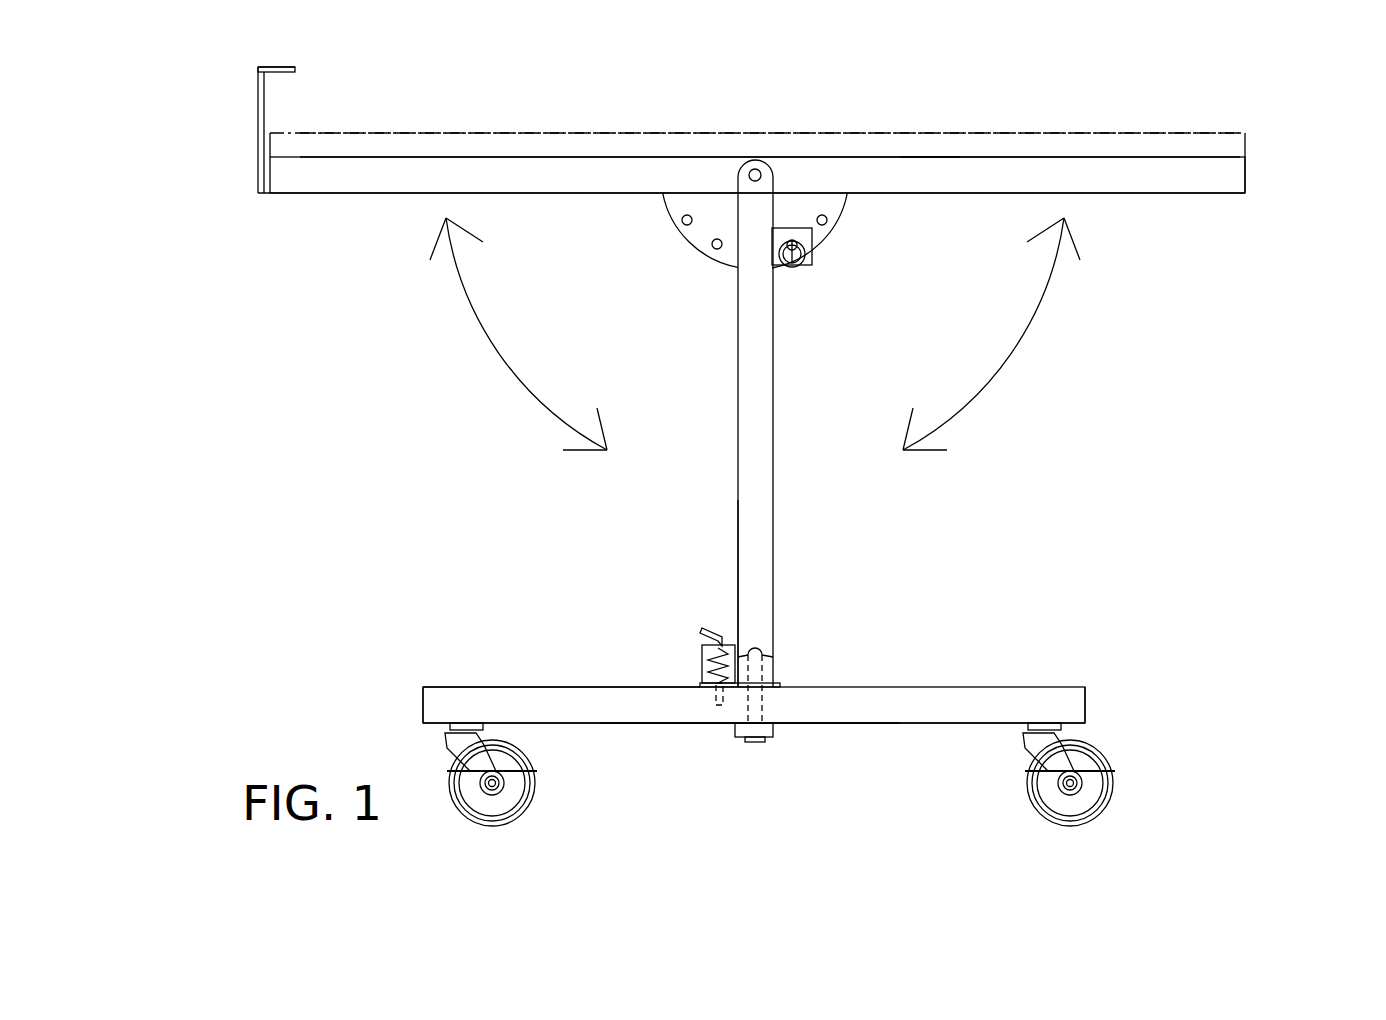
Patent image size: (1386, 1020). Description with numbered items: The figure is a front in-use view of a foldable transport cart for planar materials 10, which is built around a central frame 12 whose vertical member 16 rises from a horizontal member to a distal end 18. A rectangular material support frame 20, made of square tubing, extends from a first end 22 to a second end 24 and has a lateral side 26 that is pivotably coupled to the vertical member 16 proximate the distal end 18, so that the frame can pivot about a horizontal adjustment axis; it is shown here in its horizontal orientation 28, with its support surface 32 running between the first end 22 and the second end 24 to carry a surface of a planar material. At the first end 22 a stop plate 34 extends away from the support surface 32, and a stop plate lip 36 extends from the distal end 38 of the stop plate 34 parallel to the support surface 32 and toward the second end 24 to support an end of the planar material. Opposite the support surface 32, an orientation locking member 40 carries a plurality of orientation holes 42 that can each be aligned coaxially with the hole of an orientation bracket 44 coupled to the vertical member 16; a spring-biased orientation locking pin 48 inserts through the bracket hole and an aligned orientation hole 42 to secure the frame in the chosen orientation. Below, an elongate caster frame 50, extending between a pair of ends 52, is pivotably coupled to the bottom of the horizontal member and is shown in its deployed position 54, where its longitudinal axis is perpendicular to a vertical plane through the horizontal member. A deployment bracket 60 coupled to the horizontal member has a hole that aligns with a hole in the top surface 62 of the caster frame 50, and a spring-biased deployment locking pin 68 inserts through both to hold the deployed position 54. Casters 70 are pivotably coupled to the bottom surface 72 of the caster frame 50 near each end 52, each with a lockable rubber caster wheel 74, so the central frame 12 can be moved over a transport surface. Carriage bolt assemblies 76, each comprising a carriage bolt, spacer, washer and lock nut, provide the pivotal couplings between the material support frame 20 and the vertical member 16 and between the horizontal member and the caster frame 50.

The foldable transport cart for planar materials 10 is at (1190, 552).
The central frame 12 is at (760, 575).
The vertical member 16 is at (764, 386).
The distal end 18 is at (758, 157).
The material support frame 20 is at (1177, 180).
The first end 22 is at (266, 173).
The second end 24 is at (1245, 172).
The lateral side 26 is at (473, 168).
The horizontal orientation 28 is at (383, 98).
The support surface 32 is at (930, 157).
The stop plate 34 is at (258, 127).
The stop plate lip 36 is at (283, 68).
The distal end 38 is at (258, 68).
The orientation locking member 40 is at (700, 258).
The orientation holes 42 is at (682, 220).
The orientation bracket 44 is at (808, 240).
The orientation locking pin 48 is at (794, 258).
The caster frame 50 is at (905, 700).
The ends 52 is at (423, 700).
The deployed position 54 is at (729, 840).
The deployment bracket 60 is at (702, 652).
The top surface 62 is at (485, 687).
The deployment locking pin 68 is at (716, 690).
The caster 70 is at (470, 846).
The bottom surface 72 is at (590, 725).
The caster wheel 74 is at (505, 803).
The carriage bolt assemblies 76 is at (806, 158).